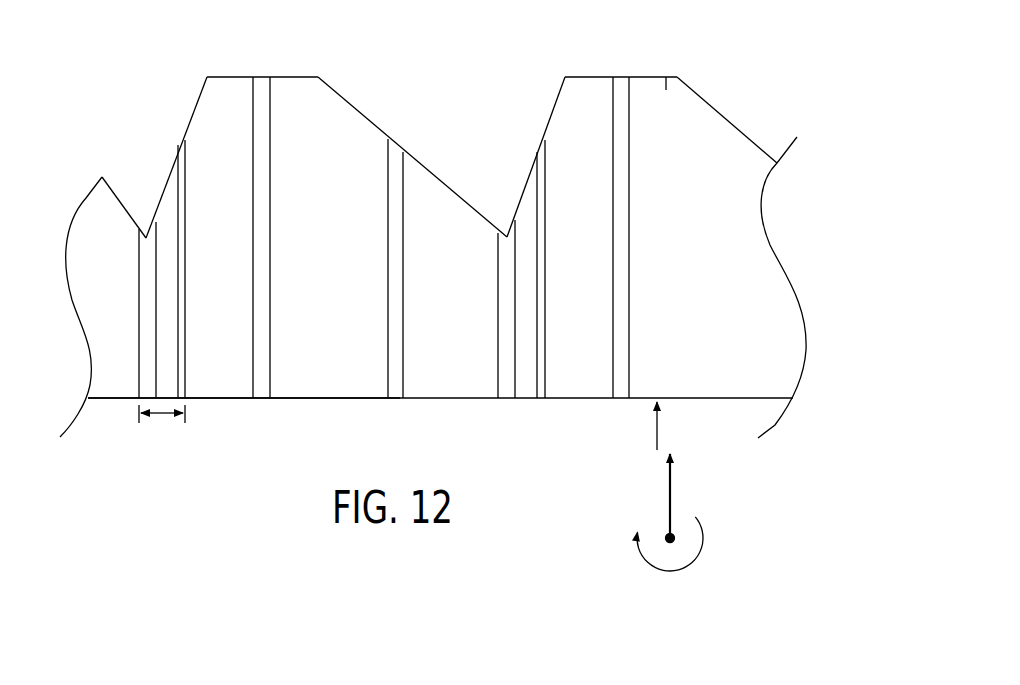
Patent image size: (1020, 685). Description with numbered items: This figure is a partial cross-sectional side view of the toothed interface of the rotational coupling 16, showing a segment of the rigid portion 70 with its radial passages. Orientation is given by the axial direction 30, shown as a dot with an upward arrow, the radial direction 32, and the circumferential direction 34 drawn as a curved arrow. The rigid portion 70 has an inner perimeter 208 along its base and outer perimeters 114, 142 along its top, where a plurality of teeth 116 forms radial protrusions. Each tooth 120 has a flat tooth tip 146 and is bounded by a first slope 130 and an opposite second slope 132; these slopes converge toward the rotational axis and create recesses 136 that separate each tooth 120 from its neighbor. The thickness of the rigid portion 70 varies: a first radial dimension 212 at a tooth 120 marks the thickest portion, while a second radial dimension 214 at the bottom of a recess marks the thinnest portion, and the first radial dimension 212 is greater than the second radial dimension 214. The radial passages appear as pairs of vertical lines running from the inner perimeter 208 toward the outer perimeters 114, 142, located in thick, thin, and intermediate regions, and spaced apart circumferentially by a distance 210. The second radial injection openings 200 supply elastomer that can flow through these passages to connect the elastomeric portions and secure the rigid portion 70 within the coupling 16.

The rotational coupling 16 is at (452, 60).
The rigid portion 70 is at (65, 170).
The outer perimeter 142 is at (142, 210).
The outer perimeter 114 is at (205, 72).
The tooth tip 146 is at (288, 67).
The first slope 130 is at (362, 112).
The second radial dimension 214 is at (505, 217).
The second slope 132 is at (552, 108).
The recesses 136 is at (492, 80).
The first radial dimension 212 is at (655, 75).
The second radial injection openings 200 is at (622, 390).
The tooth 120 is at (666, 88).
The plurality of teeth 116 is at (727, 108).
The inner perimeter 208 is at (293, 400).
The distance 210 is at (160, 415).
The radial direction 32 is at (672, 500).
The axial direction 30 is at (667, 533).
The circumferential direction 34 is at (683, 572).